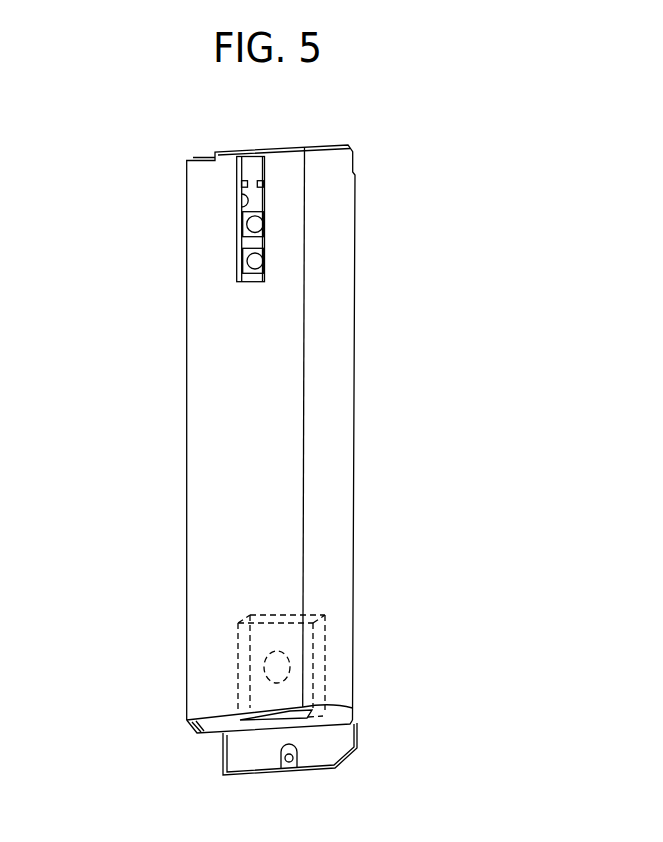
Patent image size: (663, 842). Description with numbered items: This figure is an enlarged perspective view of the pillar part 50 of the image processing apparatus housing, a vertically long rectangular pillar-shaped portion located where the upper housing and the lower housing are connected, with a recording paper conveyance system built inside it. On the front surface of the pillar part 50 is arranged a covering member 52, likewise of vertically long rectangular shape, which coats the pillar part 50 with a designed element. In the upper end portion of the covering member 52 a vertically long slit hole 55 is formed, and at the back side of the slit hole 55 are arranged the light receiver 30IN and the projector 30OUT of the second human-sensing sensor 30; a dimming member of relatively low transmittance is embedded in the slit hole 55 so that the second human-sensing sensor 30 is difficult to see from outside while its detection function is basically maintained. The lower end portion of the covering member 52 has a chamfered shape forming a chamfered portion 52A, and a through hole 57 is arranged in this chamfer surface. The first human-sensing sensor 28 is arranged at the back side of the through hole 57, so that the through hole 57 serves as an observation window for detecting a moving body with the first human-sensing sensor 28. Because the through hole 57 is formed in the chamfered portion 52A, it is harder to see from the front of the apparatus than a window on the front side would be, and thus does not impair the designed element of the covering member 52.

The pillar part 50 is at (362, 175).
The covering member 52 is at (202, 342).
The chamfered portion 52A is at (187, 725).
The slit hole 55 is at (238, 190).
The second human-sensing sensor 30 is at (382, 245).
The light receiver 30IN is at (258, 225).
The projector 30OUT is at (258, 263).
The first human-sensing sensor 28 is at (325, 653).
The through hole 57 is at (215, 737).